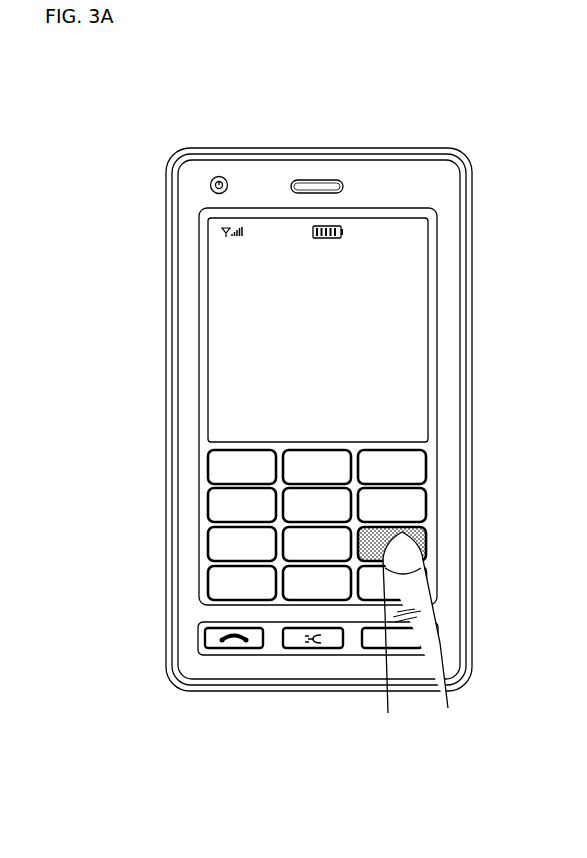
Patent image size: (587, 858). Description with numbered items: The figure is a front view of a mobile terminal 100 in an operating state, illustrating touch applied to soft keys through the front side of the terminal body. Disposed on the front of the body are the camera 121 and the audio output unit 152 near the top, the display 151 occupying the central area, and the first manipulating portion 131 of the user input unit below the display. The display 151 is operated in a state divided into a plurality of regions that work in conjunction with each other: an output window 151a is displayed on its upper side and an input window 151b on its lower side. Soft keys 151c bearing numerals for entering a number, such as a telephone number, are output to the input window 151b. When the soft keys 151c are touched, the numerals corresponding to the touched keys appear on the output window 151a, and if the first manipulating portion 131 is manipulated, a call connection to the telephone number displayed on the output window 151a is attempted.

The mobile terminal 100 is at (152, 137).
The camera 121 is at (219, 176).
The audio output unit 152 is at (321, 181).
The display 151 is at (197, 305).
The output window 151a is at (216, 368).
The input window 151b is at (202, 524).
The soft keys 151c is at (217, 467).
The first manipulating portion 131 is at (235, 643).